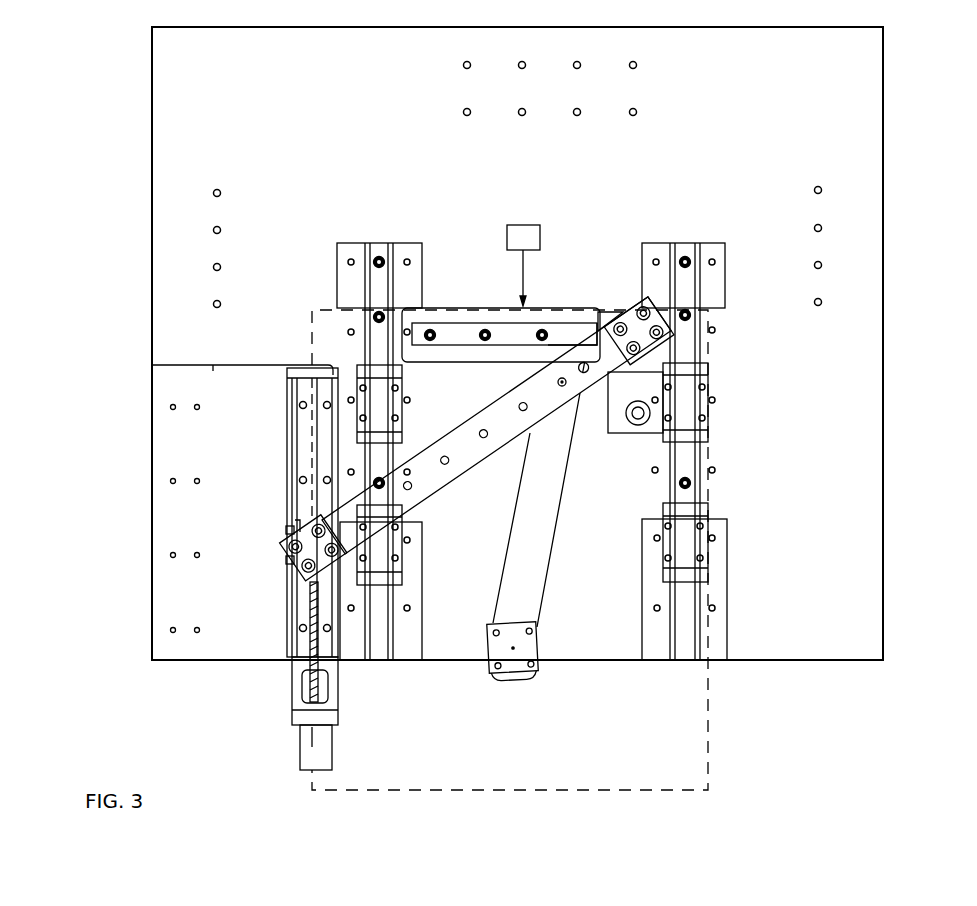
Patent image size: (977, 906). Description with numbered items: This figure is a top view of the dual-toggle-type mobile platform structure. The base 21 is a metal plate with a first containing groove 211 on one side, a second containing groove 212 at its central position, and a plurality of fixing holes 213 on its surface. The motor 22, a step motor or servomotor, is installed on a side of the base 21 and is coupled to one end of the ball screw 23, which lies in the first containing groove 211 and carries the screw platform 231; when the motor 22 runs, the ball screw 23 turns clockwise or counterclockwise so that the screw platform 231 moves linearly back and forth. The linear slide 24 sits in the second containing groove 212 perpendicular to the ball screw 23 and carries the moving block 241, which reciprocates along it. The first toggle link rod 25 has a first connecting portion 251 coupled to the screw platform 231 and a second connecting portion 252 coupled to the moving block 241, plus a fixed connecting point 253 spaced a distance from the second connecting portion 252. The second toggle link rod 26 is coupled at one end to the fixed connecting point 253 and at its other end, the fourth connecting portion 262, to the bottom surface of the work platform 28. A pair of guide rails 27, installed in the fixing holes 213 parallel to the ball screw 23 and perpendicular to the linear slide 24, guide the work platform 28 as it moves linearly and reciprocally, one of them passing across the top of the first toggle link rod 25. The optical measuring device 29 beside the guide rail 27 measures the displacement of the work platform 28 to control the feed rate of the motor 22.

The base 21 is at (840, 100).
The first containing groove 211 is at (180, 498).
The second containing groove 212 is at (446, 322).
The fixing holes 213 is at (822, 302).
The motor 22 is at (323, 748).
The ball screw 23 is at (312, 608).
The screw platform 231 is at (288, 524).
The linear slide 24 is at (497, 330).
The moving block 241 is at (604, 318).
The first toggle link rod 25 is at (458, 458).
The first connecting portion 251 is at (285, 565).
The second connecting portion 252 is at (638, 330).
The fixed connecting point 253 is at (558, 326).
The second toggle link rod 26 is at (542, 595).
The fourth connecting portion 262 is at (558, 383).
The guide rail 27 is at (380, 287).
The work platform 28 is at (710, 736).
The optical measuring device 29 is at (518, 232).